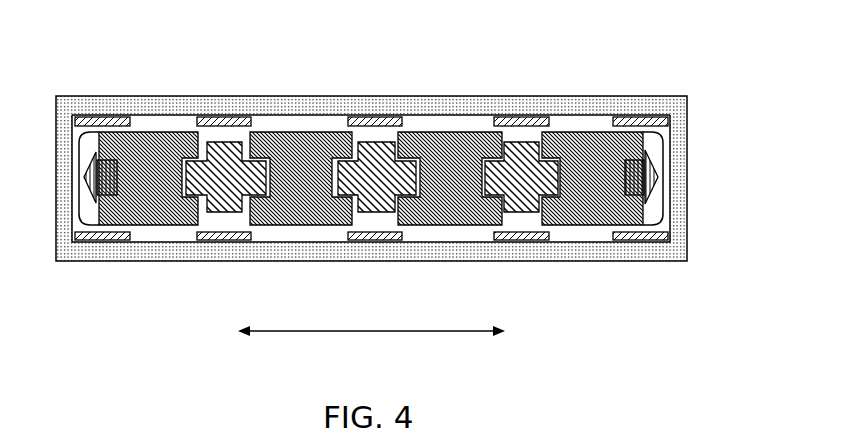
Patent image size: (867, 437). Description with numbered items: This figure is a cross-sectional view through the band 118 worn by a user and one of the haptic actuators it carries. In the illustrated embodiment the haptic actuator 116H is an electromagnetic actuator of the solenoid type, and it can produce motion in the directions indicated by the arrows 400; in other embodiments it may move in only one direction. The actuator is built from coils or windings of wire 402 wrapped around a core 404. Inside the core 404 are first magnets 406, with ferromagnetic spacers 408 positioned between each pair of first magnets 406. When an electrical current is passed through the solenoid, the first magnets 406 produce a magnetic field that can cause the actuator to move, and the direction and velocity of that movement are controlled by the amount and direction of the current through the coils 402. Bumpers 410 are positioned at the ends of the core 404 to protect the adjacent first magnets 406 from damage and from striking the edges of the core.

The band 118 is at (685, 120).
The haptic actuator 116H is at (173, 242).
The core 404 is at (452, 115).
The coils of wire 402 is at (357, 118).
The first magnets 406 is at (595, 138).
The ferromagnetic spacers 408 is at (227, 145).
The bumpers 410 is at (658, 178).
The arrows 400 is at (365, 331).